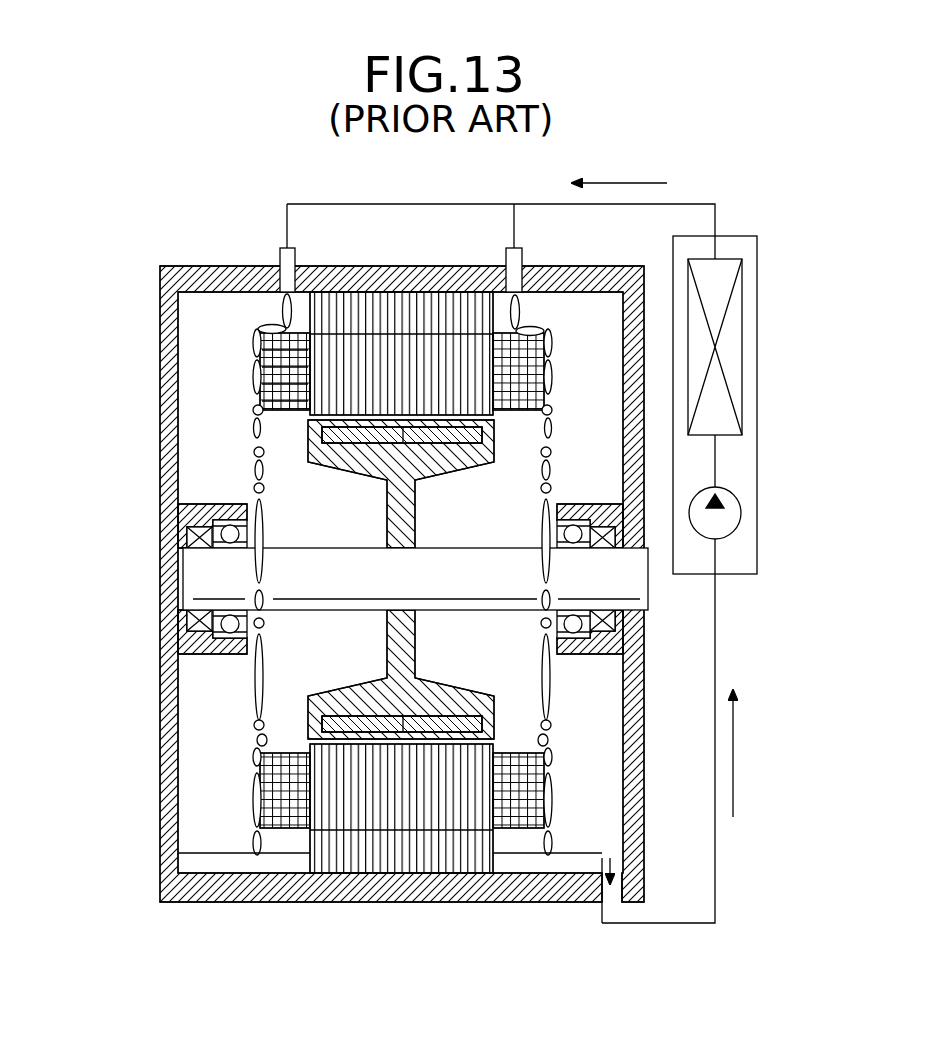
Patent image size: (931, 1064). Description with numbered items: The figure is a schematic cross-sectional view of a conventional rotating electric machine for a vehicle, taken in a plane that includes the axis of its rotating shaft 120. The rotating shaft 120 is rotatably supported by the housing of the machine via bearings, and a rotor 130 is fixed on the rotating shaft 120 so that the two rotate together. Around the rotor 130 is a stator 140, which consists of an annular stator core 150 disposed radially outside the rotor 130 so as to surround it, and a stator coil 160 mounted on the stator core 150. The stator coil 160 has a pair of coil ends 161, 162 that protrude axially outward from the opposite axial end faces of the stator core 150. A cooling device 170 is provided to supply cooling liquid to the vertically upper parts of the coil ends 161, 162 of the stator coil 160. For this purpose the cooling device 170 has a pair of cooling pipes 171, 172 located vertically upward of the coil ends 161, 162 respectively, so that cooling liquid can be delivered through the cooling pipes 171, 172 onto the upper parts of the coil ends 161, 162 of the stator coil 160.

The rotating shaft 120 is at (197, 577).
The rotor 130 is at (347, 699).
The stator 140 is at (88, 297).
The stator core 150 is at (309, 314).
The stator coil 160 is at (261, 357).
The coil end 161 is at (280, 385).
The coil end 162 is at (546, 374).
The cooling device 170 is at (758, 321).
The cooling pipe 171 is at (280, 262).
The cooling pipe 172 is at (522, 258).